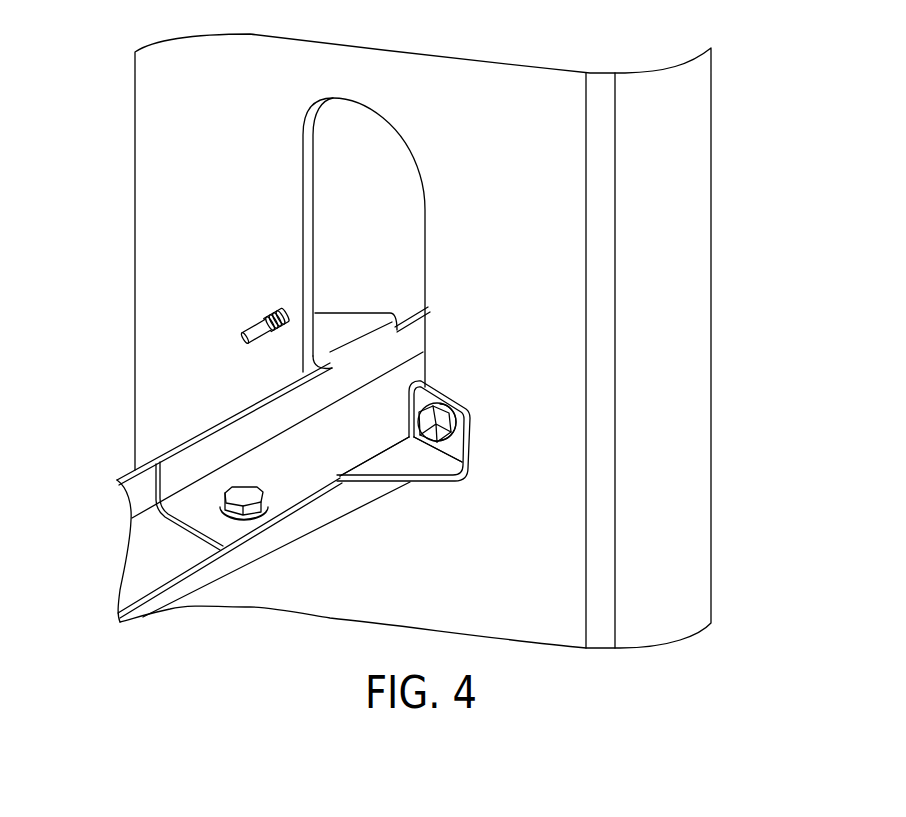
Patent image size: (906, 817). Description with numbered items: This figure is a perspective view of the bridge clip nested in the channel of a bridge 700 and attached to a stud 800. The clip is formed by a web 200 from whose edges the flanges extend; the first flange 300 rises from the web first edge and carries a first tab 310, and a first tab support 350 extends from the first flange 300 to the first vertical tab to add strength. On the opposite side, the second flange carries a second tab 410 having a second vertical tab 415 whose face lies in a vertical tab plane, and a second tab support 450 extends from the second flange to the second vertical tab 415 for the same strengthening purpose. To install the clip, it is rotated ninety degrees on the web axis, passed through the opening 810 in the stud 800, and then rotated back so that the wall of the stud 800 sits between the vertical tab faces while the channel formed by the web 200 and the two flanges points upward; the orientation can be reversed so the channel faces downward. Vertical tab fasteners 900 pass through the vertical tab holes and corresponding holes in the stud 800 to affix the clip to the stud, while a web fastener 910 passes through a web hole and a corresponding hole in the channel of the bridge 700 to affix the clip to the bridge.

The stud 800 is at (499, 100).
The opening in the stud 810 is at (336, 182).
The first flange 300 is at (172, 464).
The first tab 310 is at (345, 262).
The first tab support 350 is at (348, 326).
The web 200 is at (180, 529).
The bridge 700 is at (205, 588).
The vertical tab fasteners 900 is at (242, 336).
The web fastener 910 is at (242, 488).
The second tab 410 is at (515, 468).
The second vertical tab 415 is at (480, 408).
The second tab support 450 is at (424, 455).